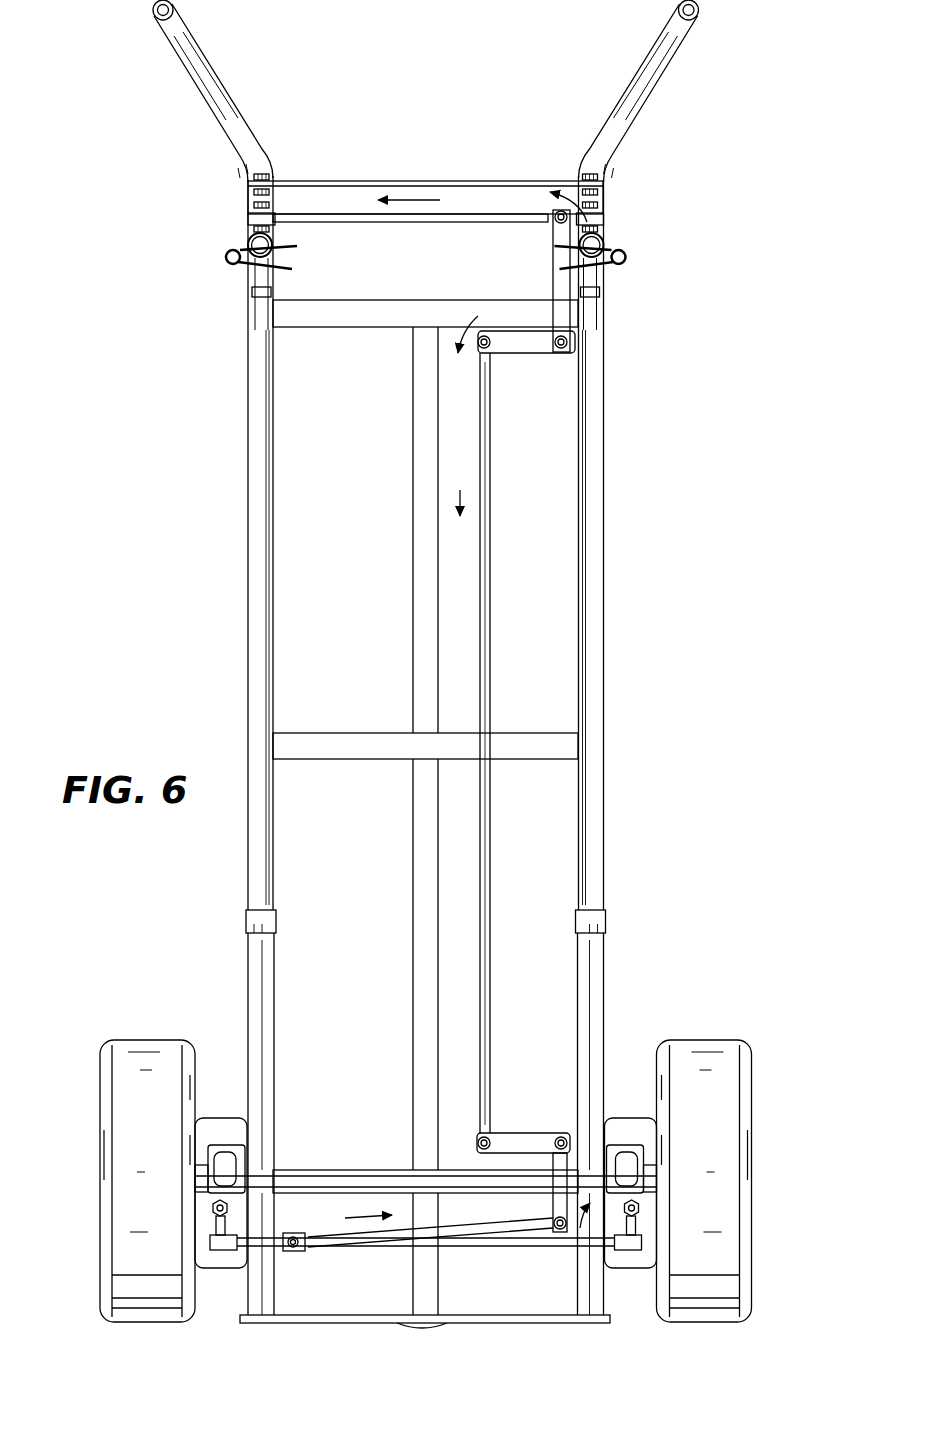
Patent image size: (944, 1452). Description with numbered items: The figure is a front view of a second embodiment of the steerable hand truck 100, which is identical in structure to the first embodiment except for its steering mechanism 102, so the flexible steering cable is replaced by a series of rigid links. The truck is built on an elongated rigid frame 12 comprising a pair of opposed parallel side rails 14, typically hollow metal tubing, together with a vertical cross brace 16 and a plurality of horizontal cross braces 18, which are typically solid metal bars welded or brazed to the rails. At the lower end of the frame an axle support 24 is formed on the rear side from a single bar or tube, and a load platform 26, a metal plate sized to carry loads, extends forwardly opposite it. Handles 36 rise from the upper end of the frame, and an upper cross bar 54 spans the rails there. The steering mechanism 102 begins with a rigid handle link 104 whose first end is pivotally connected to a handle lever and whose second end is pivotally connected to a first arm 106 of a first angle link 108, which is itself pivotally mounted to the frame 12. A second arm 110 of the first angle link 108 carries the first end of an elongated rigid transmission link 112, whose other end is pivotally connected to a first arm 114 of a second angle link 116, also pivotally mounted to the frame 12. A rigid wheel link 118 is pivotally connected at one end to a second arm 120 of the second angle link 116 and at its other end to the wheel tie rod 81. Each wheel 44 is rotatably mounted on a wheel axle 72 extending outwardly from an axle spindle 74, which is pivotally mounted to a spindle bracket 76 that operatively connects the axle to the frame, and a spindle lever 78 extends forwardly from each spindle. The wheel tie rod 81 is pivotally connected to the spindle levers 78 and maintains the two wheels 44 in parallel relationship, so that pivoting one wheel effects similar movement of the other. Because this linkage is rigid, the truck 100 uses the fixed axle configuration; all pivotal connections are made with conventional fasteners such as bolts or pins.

The frame 12 is at (660, 890).
The side rails 14 is at (277, 493).
The vertical cross brace 16 is at (422, 1001).
The horizontal cross braces 18 is at (315, 322).
The axle support 24 is at (283, 1021).
The load platform 26 is at (507, 1312).
The handle 36 is at (207, 99).
The wheels 44 is at (98, 1107).
The upper cross bar 54 is at (447, 181).
The wheel axle 72 is at (195, 1178).
The axle spindle 74 is at (220, 1155).
The spindle bracket 76 is at (240, 1210).
The spindle lever 78 is at (210, 1223).
The wheel tie rod 81 is at (540, 1244).
The steerable hand truck 100 is at (752, 337).
The steering mechanism 102 is at (553, 681).
The handle link 104 is at (327, 218).
The first arm 106 is at (553, 289).
The first angle link 108 is at (541, 357).
The second arm 110 is at (497, 353).
The transmission link 112 is at (491, 521).
The first arm 114 is at (517, 1138).
The second angle link 116 is at (560, 1129).
The wheel link 118 is at (346, 1241).
The second arm 120 is at (553, 1204).